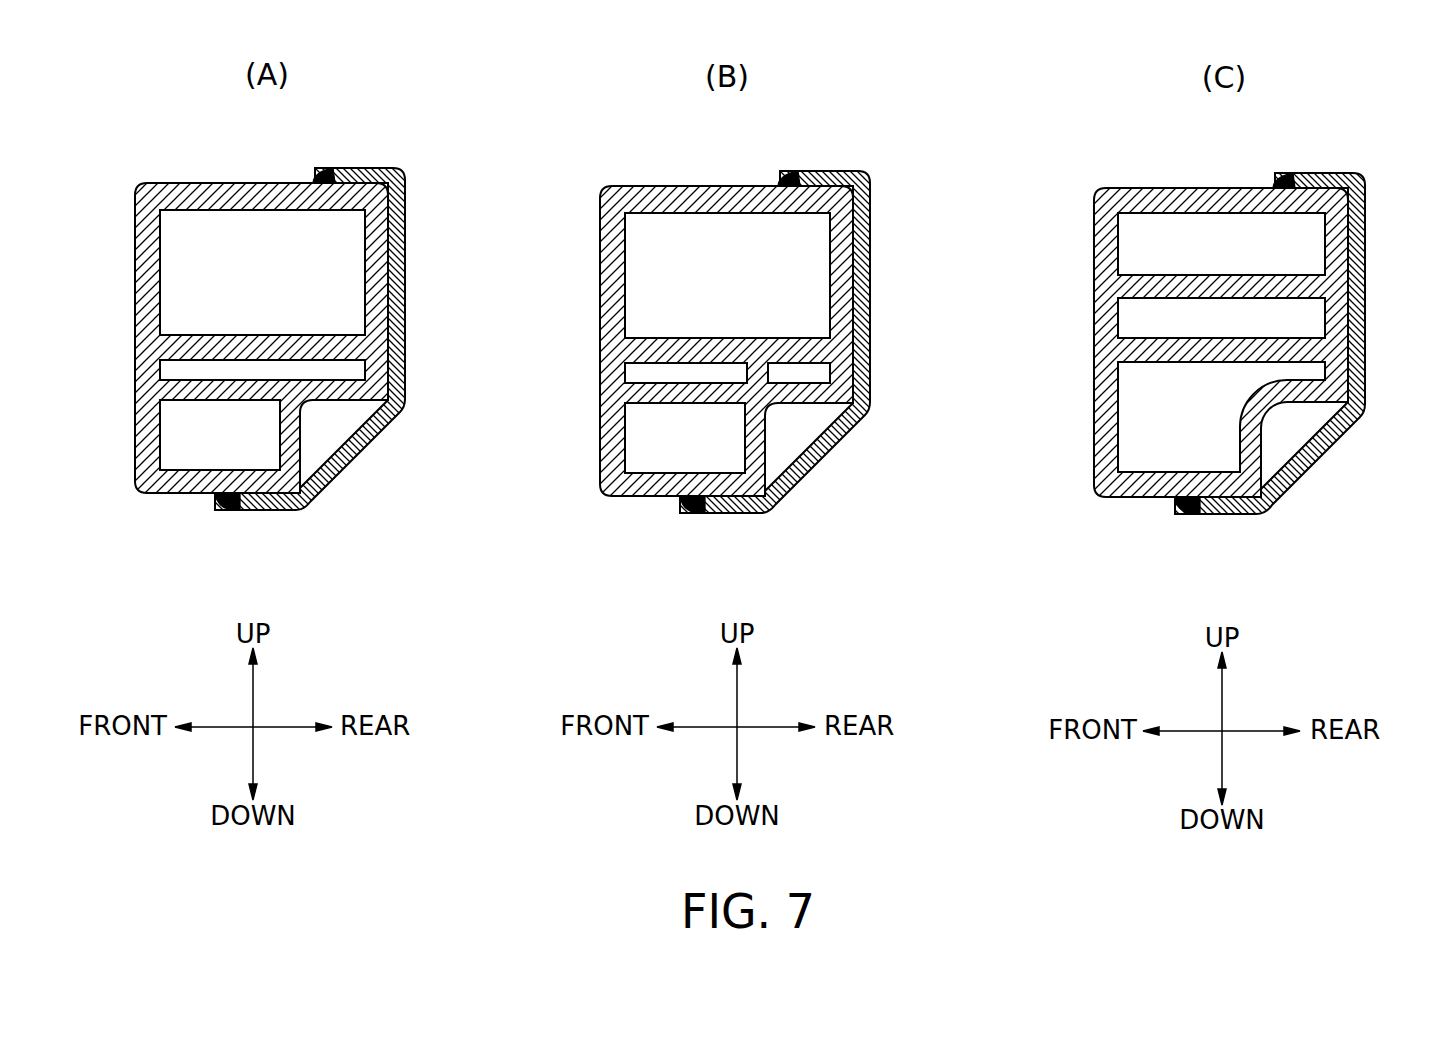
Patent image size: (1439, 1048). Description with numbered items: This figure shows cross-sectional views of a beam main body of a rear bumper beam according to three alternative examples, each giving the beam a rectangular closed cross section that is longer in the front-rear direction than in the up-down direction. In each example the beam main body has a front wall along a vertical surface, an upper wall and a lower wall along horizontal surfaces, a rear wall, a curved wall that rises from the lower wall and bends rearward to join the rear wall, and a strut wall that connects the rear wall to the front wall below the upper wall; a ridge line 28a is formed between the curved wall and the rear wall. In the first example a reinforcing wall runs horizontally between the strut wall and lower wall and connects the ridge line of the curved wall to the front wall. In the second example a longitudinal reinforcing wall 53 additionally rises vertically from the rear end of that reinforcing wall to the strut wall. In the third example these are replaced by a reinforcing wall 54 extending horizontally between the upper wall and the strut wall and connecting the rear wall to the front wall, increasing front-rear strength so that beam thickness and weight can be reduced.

The ridge line 28a is at (280, 380).
The longitudinal reinforcing wall 53 is at (775, 329).
The reinforcing wall 54 is at (1263, 285).